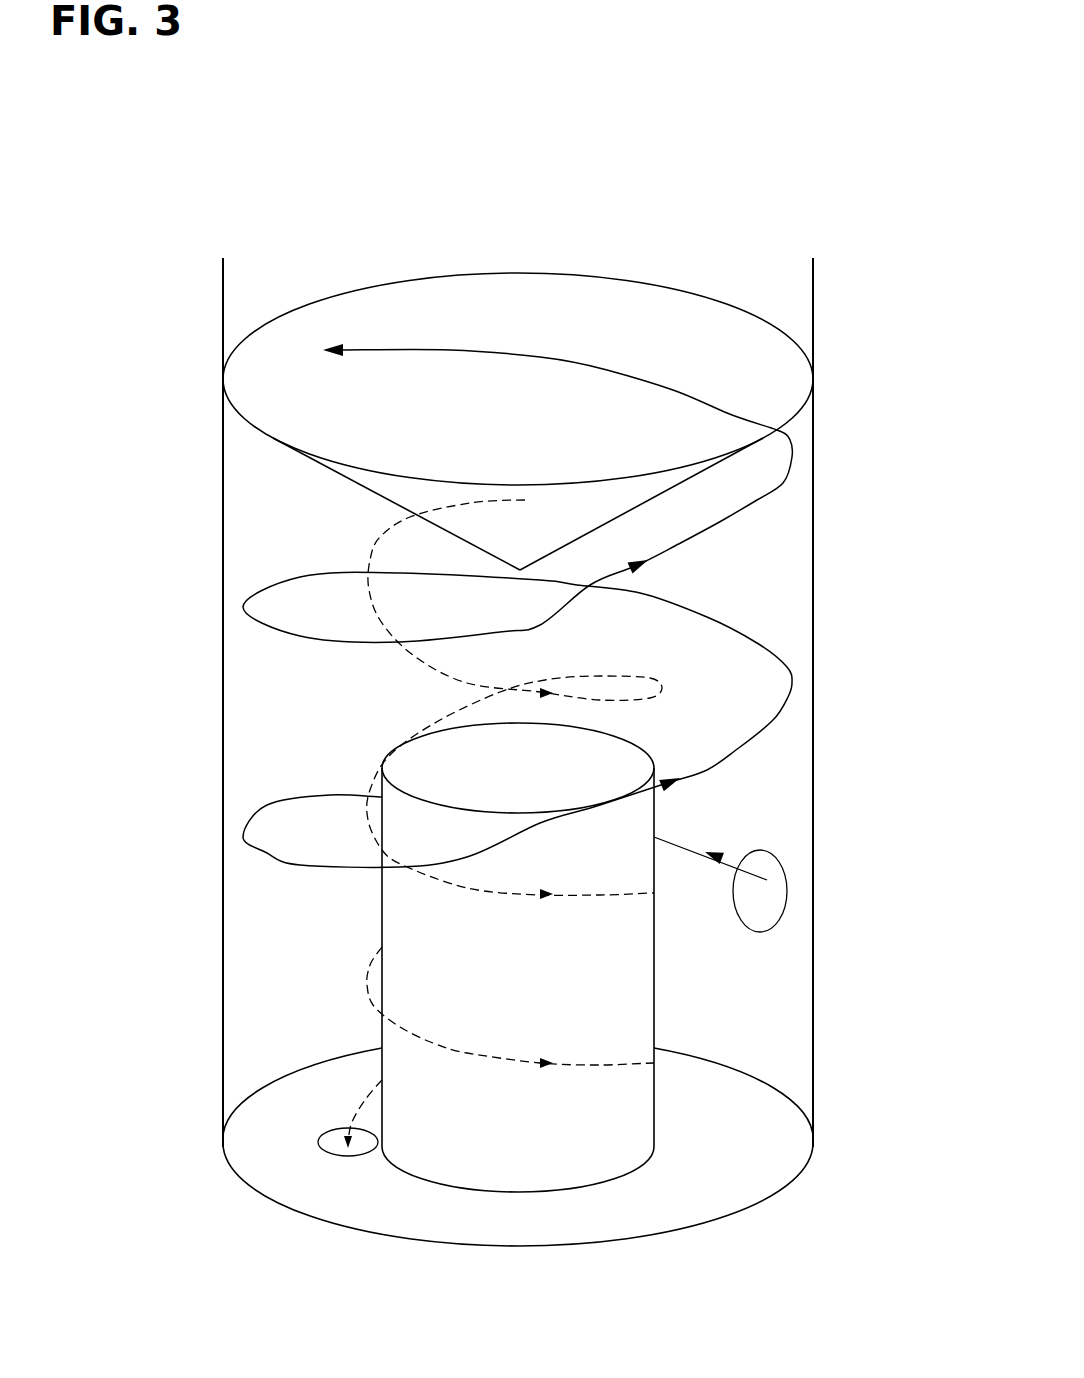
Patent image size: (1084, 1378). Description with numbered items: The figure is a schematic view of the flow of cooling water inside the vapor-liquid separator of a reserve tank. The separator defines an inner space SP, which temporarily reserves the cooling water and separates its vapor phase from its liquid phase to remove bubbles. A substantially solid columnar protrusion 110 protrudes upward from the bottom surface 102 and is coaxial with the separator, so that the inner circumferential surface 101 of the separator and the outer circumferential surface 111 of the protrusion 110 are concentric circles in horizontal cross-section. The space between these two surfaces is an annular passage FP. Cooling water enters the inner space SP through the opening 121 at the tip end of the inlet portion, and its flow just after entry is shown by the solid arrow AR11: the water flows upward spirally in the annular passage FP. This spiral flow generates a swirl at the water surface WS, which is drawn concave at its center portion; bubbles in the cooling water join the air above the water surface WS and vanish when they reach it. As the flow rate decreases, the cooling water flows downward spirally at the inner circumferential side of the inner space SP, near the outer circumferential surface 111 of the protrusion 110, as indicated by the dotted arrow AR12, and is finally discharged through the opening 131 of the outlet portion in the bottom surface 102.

The inner circumferential surface 101 is at (813, 553).
The bottom surface 102 is at (777, 1127).
The protrusion 110 is at (617, 760).
The outer circumferential surface 111 is at (654, 993).
The opening 121 is at (762, 918).
The opening 131 is at (333, 1143).
The water surface WS is at (687, 480).
The inner space SP is at (235, 471).
The annular passage FP is at (248, 995).
The solid arrow AR11 is at (740, 747).
The dotted arrow AR12 is at (370, 552).